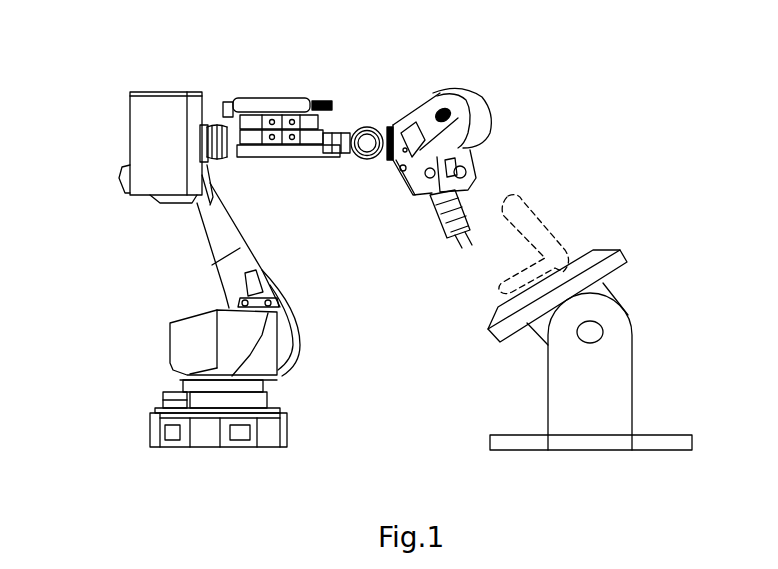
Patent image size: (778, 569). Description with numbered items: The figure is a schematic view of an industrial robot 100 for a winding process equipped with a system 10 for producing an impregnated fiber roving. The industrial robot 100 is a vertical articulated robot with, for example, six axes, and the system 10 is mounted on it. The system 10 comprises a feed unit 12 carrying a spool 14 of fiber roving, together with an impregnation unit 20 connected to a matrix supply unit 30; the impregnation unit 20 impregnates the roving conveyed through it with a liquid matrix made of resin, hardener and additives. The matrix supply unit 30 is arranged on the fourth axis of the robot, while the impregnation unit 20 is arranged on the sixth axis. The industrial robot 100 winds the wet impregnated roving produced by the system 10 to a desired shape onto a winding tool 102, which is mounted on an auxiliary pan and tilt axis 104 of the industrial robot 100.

The system for producing an impregnated fiber roving 10 is at (393, 80).
The feed unit 12 is at (496, 95).
The spool 14 is at (490, 116).
The impregnation unit 20 is at (478, 184).
The matrix supply unit 30 is at (266, 96).
The industrial robot 100 is at (120, 142).
The winding tool 102 is at (548, 229).
The auxiliary pan and tilt axis 104 is at (632, 338).